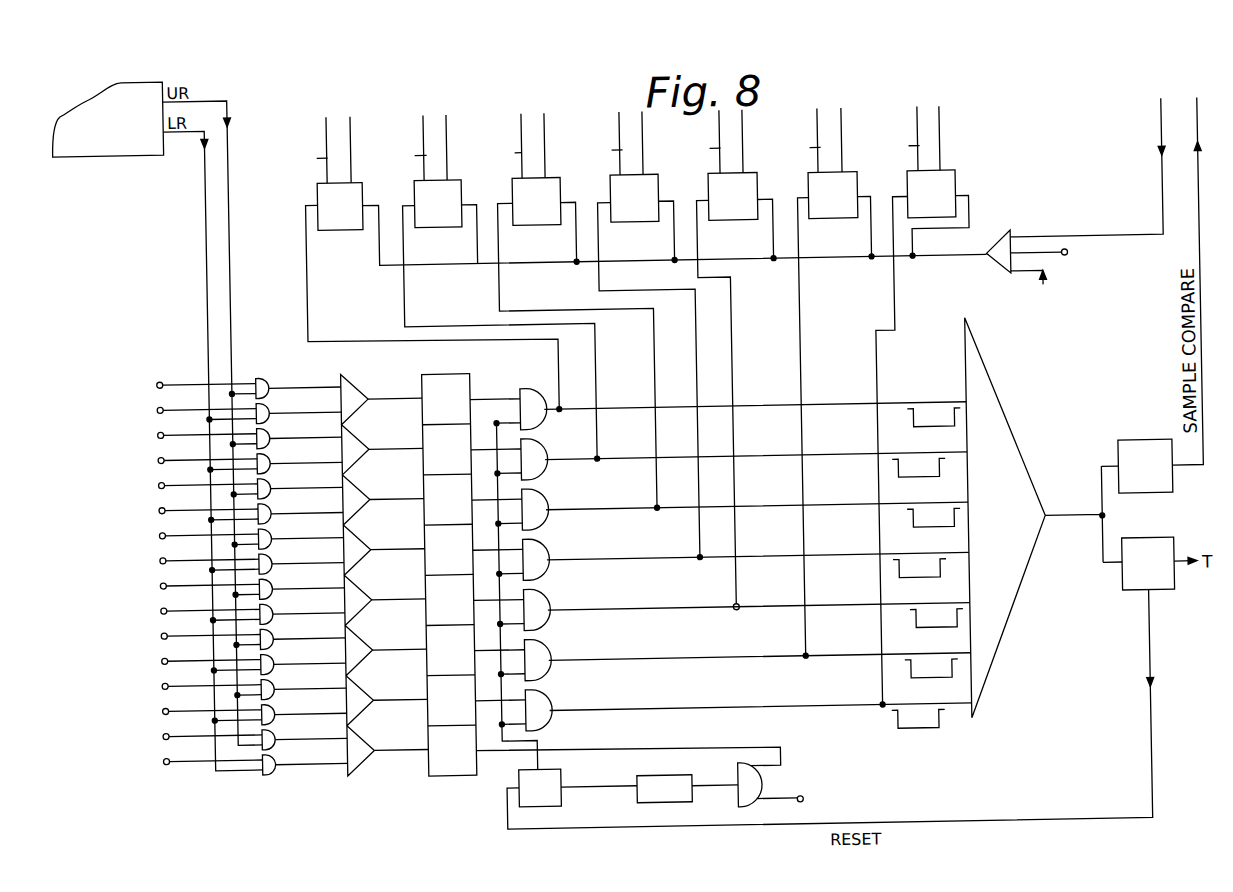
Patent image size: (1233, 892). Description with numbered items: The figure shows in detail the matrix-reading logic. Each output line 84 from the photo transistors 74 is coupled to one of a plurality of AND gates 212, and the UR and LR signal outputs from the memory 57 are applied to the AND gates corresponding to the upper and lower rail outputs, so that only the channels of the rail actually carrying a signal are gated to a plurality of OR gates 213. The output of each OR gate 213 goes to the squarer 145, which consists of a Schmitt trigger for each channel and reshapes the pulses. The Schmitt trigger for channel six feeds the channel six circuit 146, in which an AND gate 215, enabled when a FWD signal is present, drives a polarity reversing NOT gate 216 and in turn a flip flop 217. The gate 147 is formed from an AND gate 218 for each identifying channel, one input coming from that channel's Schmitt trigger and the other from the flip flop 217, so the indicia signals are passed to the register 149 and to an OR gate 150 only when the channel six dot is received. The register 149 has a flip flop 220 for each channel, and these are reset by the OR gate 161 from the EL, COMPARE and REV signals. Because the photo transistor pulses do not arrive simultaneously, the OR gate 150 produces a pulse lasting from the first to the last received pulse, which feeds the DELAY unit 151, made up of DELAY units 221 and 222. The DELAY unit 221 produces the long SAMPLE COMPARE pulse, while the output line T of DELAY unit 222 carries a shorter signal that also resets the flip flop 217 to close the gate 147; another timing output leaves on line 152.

The memory 57 is at (120, 128).
The photo transistors 74 is at (110, 501).
The output lines 84 is at (189, 770).
The AND gates 212 is at (264, 775).
The OR gates 213 is at (354, 775).
The squarer 145 is at (445, 788).
The AND gate 218 is at (531, 424).
The gate 147 is at (547, 578).
The flip flop 220 is at (366, 226).
The register 149 is at (679, 181).
The OR gate 150 is at (1043, 430).
The DELAY unit 151 is at (1116, 493).
The line 152 is at (1042, 203).
The OR gate 161 is at (1002, 281).
The NOT gate 216 is at (640, 778).
The AND gate 215 is at (748, 777).
The flip flop 217 is at (527, 805).
The channel six circuit 146 is at (676, 785).
The DELAY unit 221 is at (1138, 449).
The DELAY unit 222 is at (1128, 600).